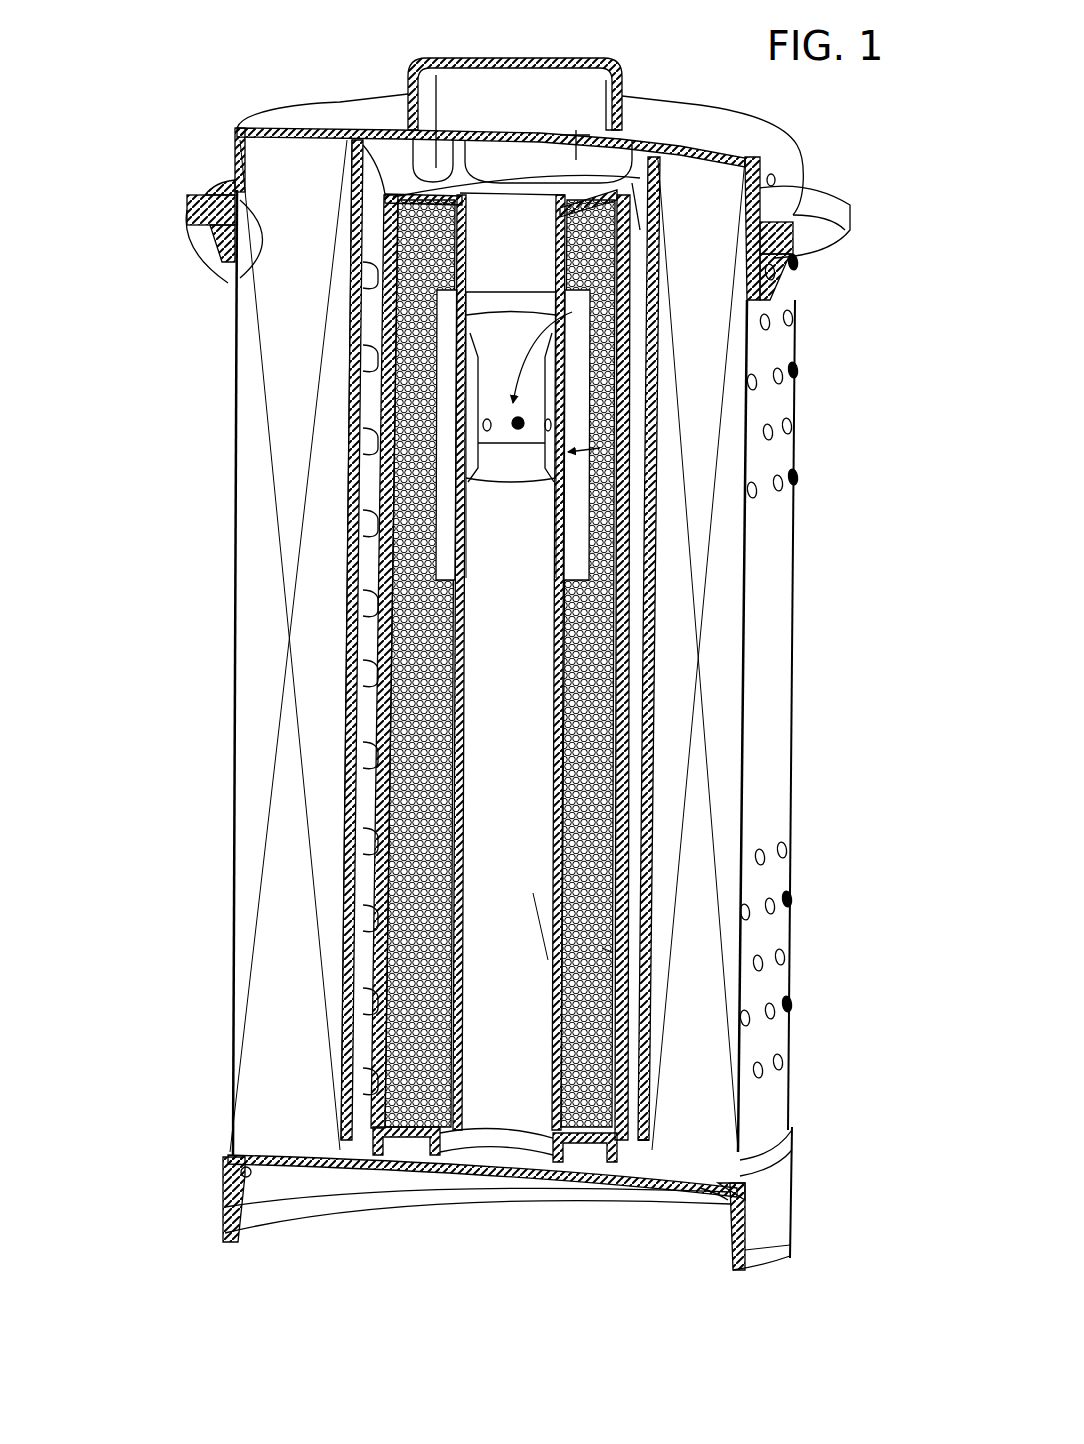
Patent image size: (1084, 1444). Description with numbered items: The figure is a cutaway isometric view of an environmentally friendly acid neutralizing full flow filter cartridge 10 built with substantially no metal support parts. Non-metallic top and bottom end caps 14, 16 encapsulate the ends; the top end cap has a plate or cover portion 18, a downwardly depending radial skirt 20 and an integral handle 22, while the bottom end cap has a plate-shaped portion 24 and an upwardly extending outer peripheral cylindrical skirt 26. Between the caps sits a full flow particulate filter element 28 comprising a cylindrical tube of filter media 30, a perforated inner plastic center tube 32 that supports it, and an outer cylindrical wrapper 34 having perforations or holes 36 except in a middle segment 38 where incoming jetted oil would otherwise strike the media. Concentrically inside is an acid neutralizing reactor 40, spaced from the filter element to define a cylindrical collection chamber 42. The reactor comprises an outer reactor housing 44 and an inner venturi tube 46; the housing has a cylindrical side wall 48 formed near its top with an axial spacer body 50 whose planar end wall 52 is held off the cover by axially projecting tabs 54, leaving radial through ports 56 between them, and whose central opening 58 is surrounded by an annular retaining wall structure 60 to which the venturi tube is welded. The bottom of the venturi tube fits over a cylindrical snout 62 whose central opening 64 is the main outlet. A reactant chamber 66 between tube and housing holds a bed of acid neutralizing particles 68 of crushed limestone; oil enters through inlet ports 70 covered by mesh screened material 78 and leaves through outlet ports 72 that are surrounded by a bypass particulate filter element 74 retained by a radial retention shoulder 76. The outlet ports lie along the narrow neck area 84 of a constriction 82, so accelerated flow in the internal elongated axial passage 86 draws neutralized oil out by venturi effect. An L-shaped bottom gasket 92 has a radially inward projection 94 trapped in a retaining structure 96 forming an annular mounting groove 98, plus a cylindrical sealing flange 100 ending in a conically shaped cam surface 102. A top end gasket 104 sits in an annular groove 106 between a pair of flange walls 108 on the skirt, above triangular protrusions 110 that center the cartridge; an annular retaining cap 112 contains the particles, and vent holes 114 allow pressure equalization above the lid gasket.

The filter cartridge 10 is at (121, 108).
The top end cap 14 is at (296, 114).
The bottom end cap 16 is at (293, 1180).
The cover portion 18 is at (350, 112).
The radial skirt 20 is at (236, 150).
The handle 22 is at (625, 68).
The plate-shaped portion 24 is at (330, 1164).
The outer peripheral cylindrical skirt 26 is at (226, 1141).
The full flow particulate filter element 28 is at (240, 642).
The filter media 30 is at (250, 768).
The perforated inner plastic center tube 32 is at (345, 720).
The outer cylindrical wrapper 34 is at (235, 690).
The perforations or holes 36 is at (795, 370).
The middle segment of the wrapper 38 is at (782, 728).
The acid neutralizing reactor 40 is at (370, 455).
The cylindrical collection chamber 42 is at (355, 330).
The outer reactor housing 44 is at (370, 400).
The inner venturi tube 46 is at (358, 266).
The cylindrical side wall 48 is at (397, 494).
The axial spacer body 50 is at (437, 168).
The planar end wall 52 is at (366, 180).
The axially projecting tabs 54 is at (466, 188).
The inlet dome 56 is at (535, 212).
The central opening 58 is at (575, 155).
The annular retaining wall structure 60 is at (642, 234).
The cylindrical snout 62 is at (550, 1164).
The central opening 64 is at (520, 1144).
The reactant chamber 66 is at (650, 975).
The acid neutralizing particles 68 is at (640, 1095).
The inlet ports 70 is at (530, 422).
The outlet ports 72 is at (590, 300).
The bypass particulate filter element 74 is at (585, 565).
The radial retention shoulder 76 is at (618, 632).
The mesh screened material 78 is at (410, 1138).
The constriction 82 is at (600, 448).
The narrow neck area 84 is at (562, 330).
The internal elongated axial passage 86 is at (605, 950).
The bottom gasket 92 is at (799, 1225).
The radially inward projection 94 is at (747, 1196).
The retaining structure 96 is at (662, 1196).
The annular mounting groove 98 is at (692, 1202).
The cylindrical sealing flange 100 is at (752, 1254).
The conically shaped cam surface 102 is at (741, 1248).
The top end gasket 104 is at (190, 207).
The annular groove 106 is at (243, 280).
The flange walls 108 is at (226, 188).
The triangular protrusions 110 is at (806, 270).
The annular retaining cap 112 is at (647, 1181).
The vent holes 114 is at (773, 176).